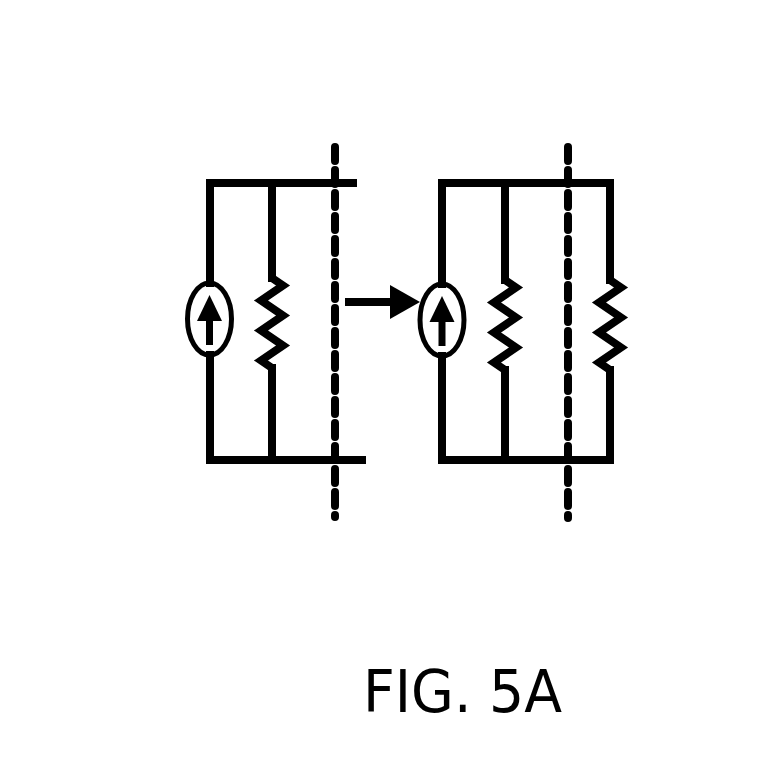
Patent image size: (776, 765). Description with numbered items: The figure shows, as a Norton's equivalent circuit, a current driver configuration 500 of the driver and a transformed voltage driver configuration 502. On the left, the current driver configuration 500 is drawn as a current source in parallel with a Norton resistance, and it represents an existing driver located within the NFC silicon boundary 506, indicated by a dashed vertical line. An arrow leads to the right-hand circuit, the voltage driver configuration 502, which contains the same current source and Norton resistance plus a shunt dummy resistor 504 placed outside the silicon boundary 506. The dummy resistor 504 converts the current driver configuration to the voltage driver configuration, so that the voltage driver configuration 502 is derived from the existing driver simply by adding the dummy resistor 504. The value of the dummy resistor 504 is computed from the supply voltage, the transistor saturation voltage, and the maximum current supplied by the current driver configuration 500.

The current driver configuration 500 is at (152, 145).
The voltage driver configuration 502 is at (468, 82).
The dummy resistor 504 is at (662, 332).
The NFC silicon boundary 506 is at (590, 150).